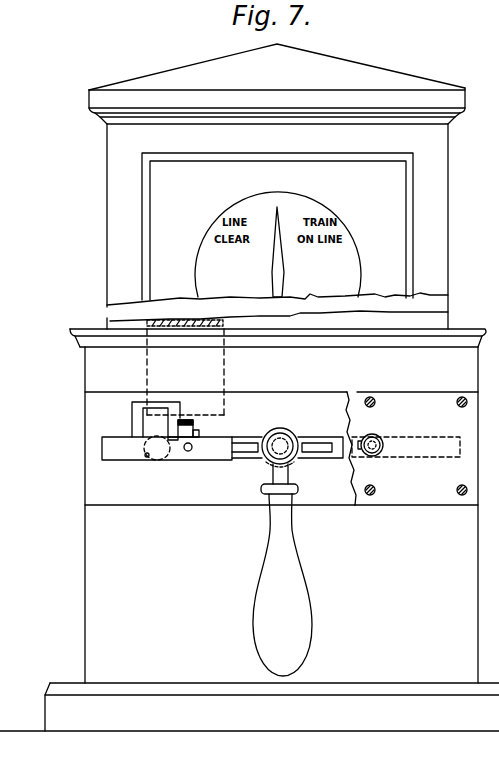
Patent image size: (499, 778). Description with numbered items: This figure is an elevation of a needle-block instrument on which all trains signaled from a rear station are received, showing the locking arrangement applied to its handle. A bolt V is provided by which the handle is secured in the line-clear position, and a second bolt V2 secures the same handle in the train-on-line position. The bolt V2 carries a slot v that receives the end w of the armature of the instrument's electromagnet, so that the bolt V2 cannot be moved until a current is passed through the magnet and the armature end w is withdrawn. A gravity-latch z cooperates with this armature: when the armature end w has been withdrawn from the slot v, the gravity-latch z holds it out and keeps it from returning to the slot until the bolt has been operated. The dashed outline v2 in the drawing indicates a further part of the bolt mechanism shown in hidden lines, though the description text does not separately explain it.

The bolt V is at (317, 450).
The bolt V2 is at (249, 452).
The indicator rod v2 is at (204, 372).
The armature end w is at (199, 431).
The gravity-latch z is at (163, 459).
The slot v is at (176, 441).